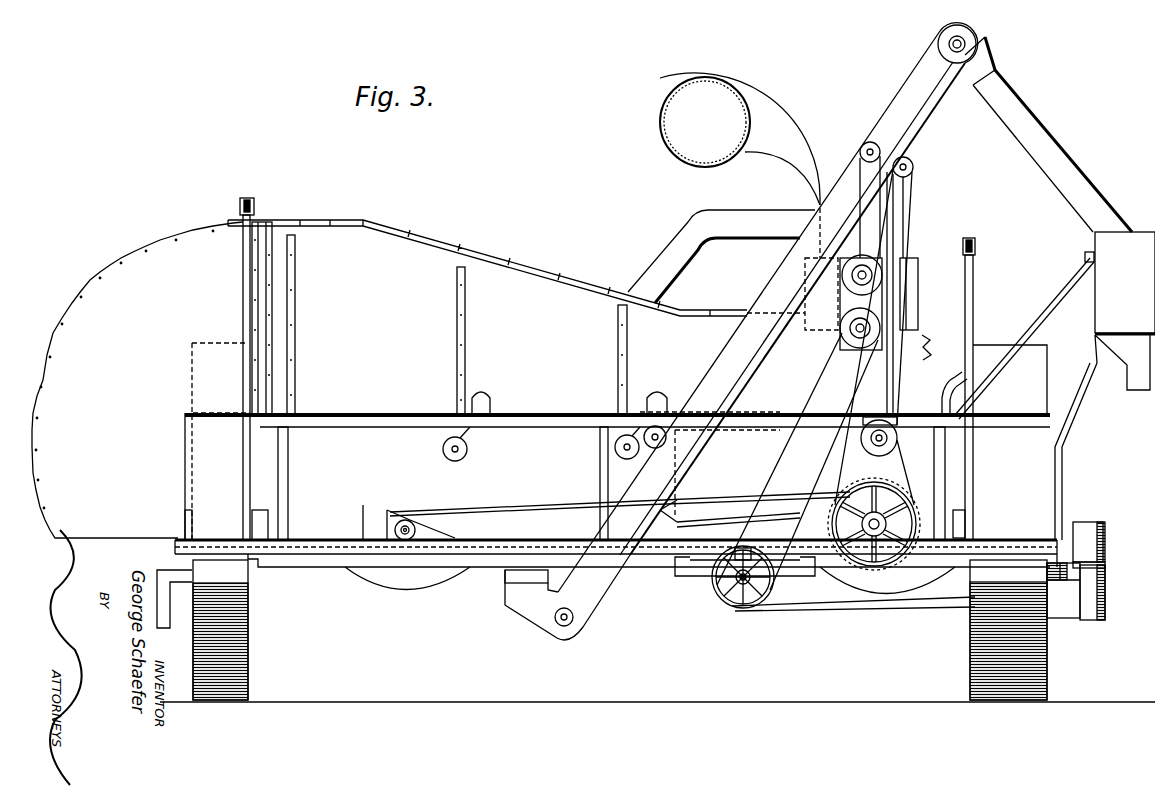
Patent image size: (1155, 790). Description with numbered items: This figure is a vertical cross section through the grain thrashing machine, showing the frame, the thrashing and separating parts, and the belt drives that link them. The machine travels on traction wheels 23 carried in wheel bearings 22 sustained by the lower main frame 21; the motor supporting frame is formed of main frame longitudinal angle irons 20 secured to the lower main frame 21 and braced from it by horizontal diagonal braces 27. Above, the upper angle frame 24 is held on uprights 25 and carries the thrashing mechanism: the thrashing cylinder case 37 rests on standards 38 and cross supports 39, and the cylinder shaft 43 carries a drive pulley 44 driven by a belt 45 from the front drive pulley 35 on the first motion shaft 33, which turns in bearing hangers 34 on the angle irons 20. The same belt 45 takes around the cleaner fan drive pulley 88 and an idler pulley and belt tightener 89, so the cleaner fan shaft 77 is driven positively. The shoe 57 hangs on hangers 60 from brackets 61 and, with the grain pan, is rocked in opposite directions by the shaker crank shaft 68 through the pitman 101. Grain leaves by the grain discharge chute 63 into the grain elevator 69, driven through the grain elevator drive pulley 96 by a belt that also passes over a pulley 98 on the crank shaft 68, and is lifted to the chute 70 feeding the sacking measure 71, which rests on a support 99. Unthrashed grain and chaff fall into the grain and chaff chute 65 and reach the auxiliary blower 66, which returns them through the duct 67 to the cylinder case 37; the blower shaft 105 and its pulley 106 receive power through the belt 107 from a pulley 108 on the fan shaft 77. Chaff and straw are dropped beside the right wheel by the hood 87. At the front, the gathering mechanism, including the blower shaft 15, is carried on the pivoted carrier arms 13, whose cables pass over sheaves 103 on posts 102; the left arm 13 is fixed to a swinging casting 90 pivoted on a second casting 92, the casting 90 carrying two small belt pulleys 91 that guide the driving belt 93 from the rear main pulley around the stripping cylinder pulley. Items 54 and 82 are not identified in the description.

The pivoted carrier arms 13 is at (157, 602).
The blower shaft 15 is at (716, 512).
The main frame longitudinal angle irons 20 is at (675, 572).
The lower main frame 21 is at (178, 550).
The wheel bearings 22 is at (270, 525).
The traction wheels 23 is at (193, 648).
The upper angle frame 24 is at (392, 410).
The uprights 25 is at (289, 444).
The horizontal diagonal braces 27 is at (327, 568).
The first motion shaft 33 is at (731, 604).
The bearing hangers 34 is at (690, 578).
The front drive pulley 35 is at (735, 560).
The thrashing cylinder case 37 is at (910, 278).
The standards 38 is at (836, 298).
The cross supports 39 is at (930, 347).
The cylinder shaft 43 is at (858, 337).
The drive pulley 44 is at (882, 331).
The belt 45 is at (801, 461).
The cylinder 54 is at (740, 139).
The shoe 57 is at (365, 538).
The hangers 60 is at (468, 448).
The brackets 61 is at (491, 405).
The grain discharge chute 63 is at (505, 578).
The grain and chaff chute 65 is at (362, 526).
The auxiliary blower 66 is at (363, 590).
The duct 67 is at (705, 214).
The shaker crank shaft 68 is at (868, 448).
The grain elevator 69 is at (923, 78).
The chute 70 is at (1030, 113).
The sacking measure 71 is at (1125, 311).
The cleaner fan shaft 77 is at (862, 523).
The guide rail 82 is at (519, 253).
The hood 87 is at (133, 264).
The cleaner fan drive pulley 88 is at (905, 489).
The idler pulley and belt tightener 89 is at (905, 262).
The swinging casting 90 is at (1105, 565).
The belt pulleys 91 is at (925, 118).
The second casting 92 is at (1060, 582).
The driving belt 93 is at (870, 609).
The grain elevator drive pulley 96 is at (966, 36).
The pulley 98 is at (883, 452).
The support 99 is at (1088, 308).
The pitman 101 is at (710, 463).
The posts 102 is at (243, 263).
The sheaves 103 is at (253, 203).
The blower shaft 105 is at (405, 519).
The pulley 106 is at (422, 531).
The belt 107 is at (515, 505).
The pulley 108 is at (838, 493).